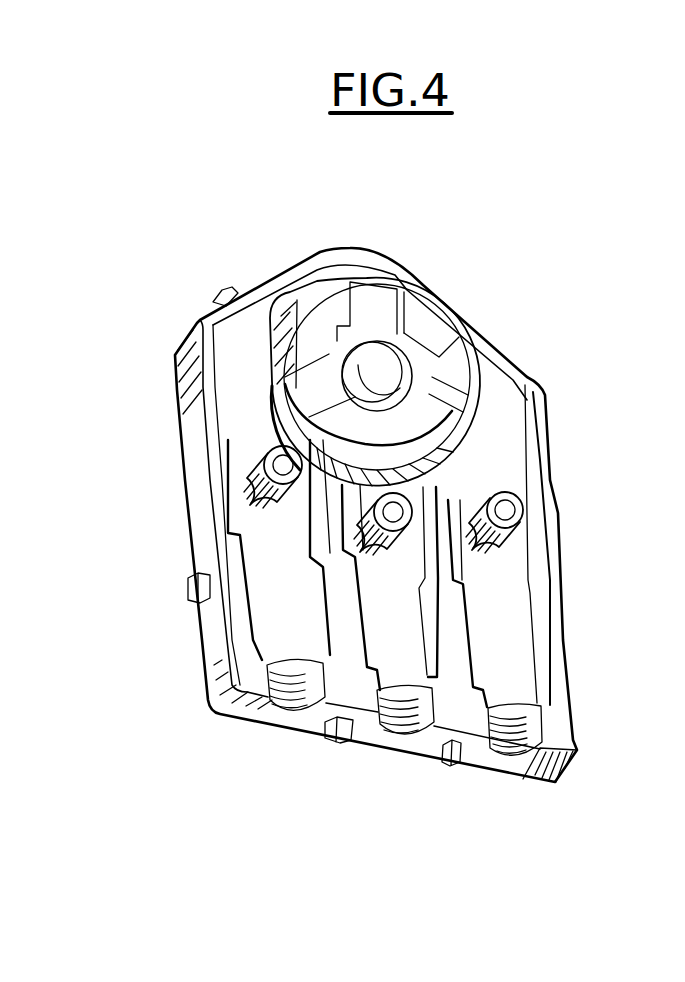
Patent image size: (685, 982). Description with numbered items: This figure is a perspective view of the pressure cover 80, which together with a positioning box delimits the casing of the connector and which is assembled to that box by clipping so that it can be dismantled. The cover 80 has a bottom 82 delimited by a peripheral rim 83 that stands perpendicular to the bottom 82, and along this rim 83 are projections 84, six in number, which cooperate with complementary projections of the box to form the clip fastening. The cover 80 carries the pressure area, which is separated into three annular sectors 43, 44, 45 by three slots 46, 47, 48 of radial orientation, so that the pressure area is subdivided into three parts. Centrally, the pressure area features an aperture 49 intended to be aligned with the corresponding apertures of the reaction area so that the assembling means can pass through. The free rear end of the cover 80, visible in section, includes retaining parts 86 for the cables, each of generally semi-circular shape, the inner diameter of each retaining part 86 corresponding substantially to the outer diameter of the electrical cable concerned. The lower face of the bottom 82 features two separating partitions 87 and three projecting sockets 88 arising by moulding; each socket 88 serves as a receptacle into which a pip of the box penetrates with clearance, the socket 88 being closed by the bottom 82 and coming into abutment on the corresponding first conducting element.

The annular sector of the pressure area 43 is at (314, 327).
The annular sector of the pressure area 44 is at (375, 443).
The annular sector of the pressure area 45 is at (430, 357).
The slot 46 is at (300, 383).
The slot 47 is at (500, 430).
The slot 48 is at (378, 303).
The aperture 49 is at (397, 351).
The pressure cover 80 is at (375, 750).
The bottom 82 is at (505, 574).
The peripheral rim 83 is at (197, 468).
The projections 84 is at (188, 593).
The cable retaining parts 86 is at (287, 713).
The separating partitions 87 is at (340, 633).
The projecting sockets 88 is at (285, 468).